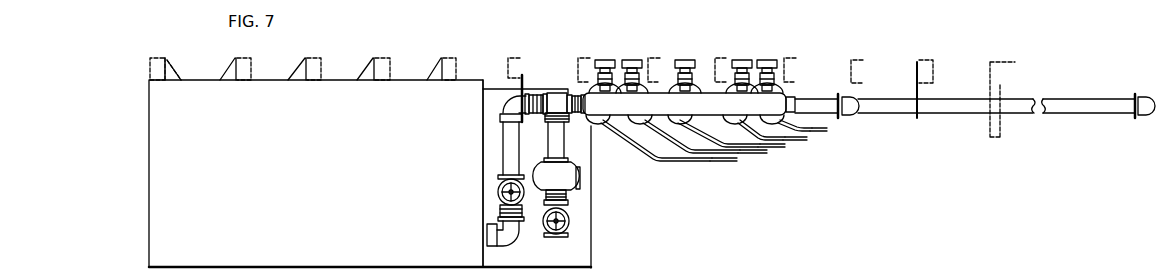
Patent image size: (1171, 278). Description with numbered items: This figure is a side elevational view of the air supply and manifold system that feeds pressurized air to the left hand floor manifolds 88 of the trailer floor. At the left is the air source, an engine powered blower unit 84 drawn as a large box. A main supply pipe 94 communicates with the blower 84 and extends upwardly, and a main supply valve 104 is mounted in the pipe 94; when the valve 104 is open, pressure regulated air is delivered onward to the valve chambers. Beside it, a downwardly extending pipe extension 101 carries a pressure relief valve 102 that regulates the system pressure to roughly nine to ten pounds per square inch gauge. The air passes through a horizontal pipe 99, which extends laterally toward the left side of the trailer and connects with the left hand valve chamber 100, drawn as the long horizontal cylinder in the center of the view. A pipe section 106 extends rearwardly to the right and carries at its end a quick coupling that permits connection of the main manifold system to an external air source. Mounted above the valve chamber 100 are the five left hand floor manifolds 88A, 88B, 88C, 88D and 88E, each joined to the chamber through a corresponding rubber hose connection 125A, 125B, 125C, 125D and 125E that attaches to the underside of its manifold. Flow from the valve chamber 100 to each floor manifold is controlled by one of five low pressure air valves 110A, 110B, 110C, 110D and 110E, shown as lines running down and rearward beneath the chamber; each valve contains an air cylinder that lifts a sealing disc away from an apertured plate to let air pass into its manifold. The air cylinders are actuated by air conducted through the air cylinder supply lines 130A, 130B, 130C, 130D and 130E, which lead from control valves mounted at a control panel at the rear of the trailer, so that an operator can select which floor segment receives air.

The engine powered blower unit 84 is at (311, 168).
The left hand floor manifolds 88 is at (856, 28).
The floor manifold 88A is at (605, 60).
The floor manifold 88B is at (633, 60).
The floor manifold 88C is at (688, 60).
The floor manifold 88D is at (743, 60).
The floor manifold 88E is at (769, 60).
The pipe 94 is at (512, 155).
The horizontal pipe 99 is at (820, 99).
The left hand valve chamber 100 is at (691, 111).
The pipe extension 101 is at (553, 137).
The pressure relief valve 102 is at (570, 190).
The main supply valve 104 is at (498, 191).
The pipe section 106 is at (965, 110).
The low pressure air valve 110A is at (605, 124).
The low pressure air valve 110B is at (648, 126).
The low pressure air valve 110C is at (692, 126).
The low pressure air valve 110D is at (742, 126).
The low pressure air valve 110E is at (793, 132).
The rubber hose connection 125A is at (604, 78).
The rubber hose connection 125B is at (632, 78).
The rubber hose connection 125C is at (686, 78).
The rubber hose connection 125D is at (742, 78).
The rubber hose connection 125E is at (771, 78).
The air cylinder supply line 130A is at (700, 162).
The air cylinder supply line 130B is at (748, 154).
The air cylinder supply line 130C is at (786, 146).
The air cylinder supply line 130D is at (808, 140).
The air cylinder supply line 130E is at (828, 130).